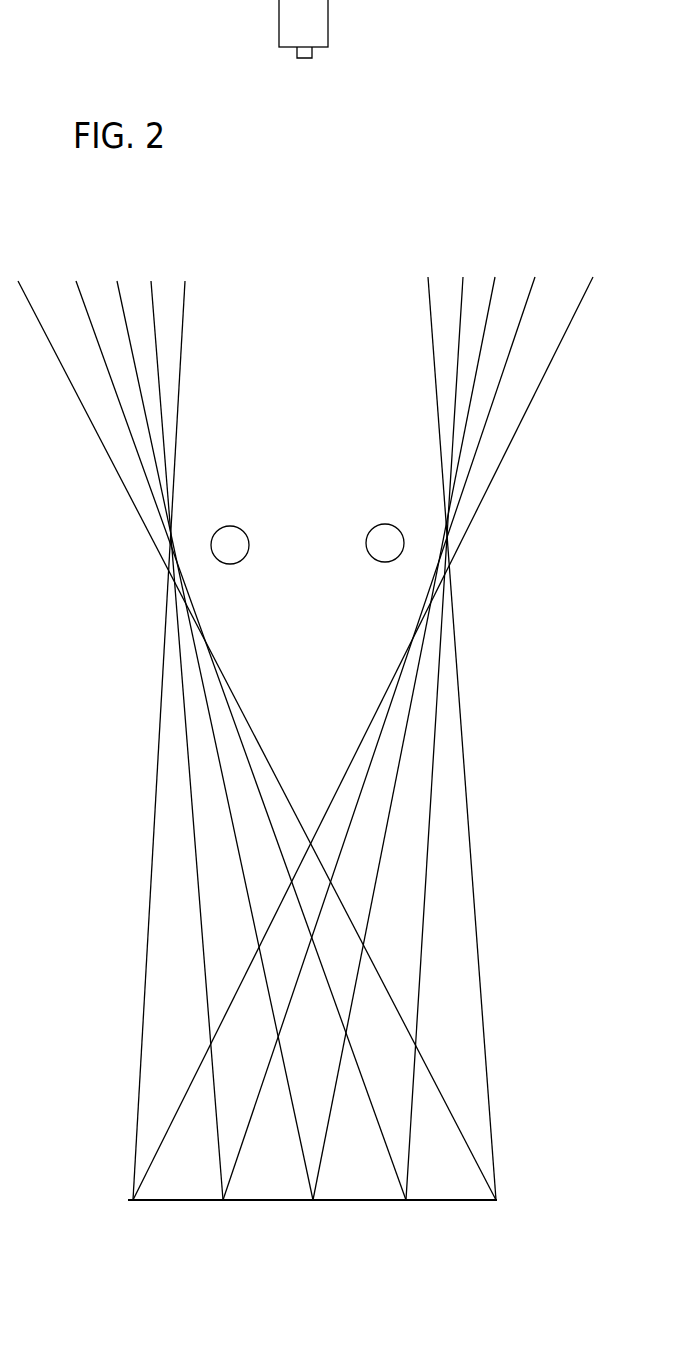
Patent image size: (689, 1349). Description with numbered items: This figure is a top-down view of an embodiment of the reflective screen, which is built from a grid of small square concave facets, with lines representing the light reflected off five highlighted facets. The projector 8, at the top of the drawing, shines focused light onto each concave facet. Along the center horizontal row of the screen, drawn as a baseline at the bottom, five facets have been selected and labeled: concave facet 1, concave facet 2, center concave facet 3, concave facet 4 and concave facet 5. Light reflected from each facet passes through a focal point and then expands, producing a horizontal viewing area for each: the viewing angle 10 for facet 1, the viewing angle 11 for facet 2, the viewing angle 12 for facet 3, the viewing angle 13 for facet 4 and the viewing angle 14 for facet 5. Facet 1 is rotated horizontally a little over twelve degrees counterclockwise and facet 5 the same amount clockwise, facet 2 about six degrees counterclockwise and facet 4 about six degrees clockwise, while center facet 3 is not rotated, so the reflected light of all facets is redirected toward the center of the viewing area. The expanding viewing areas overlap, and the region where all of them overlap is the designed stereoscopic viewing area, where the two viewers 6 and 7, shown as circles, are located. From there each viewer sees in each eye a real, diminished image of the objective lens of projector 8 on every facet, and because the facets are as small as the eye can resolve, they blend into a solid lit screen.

The concave facet 1 is at (496, 1200).
The concave facet 2 is at (406, 1200).
The center concave facet 3 is at (313, 1200).
The concave facet 4 is at (223, 1200).
The concave facet 5 is at (133, 1200).
The viewer 6 is at (385, 578).
The viewer 7 is at (240, 582).
The projector 8 is at (323, 50).
The viewing angle 10 is at (485, 1145).
The viewing angle 11 is at (400, 1155).
The viewing angle 12 is at (315, 1157).
The viewing angle 13 is at (228, 1160).
The viewing angle 14 is at (147, 1160).